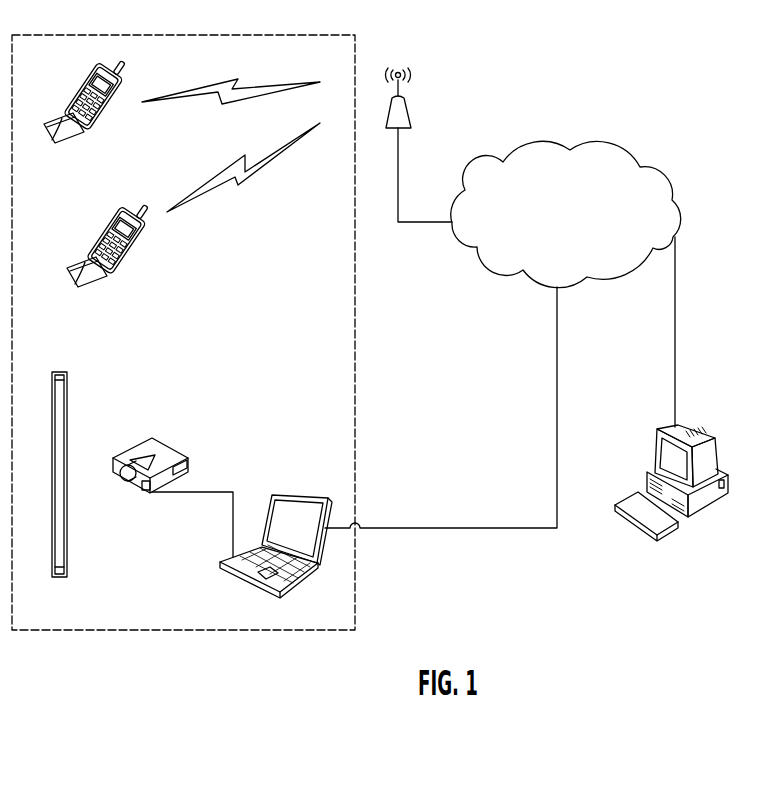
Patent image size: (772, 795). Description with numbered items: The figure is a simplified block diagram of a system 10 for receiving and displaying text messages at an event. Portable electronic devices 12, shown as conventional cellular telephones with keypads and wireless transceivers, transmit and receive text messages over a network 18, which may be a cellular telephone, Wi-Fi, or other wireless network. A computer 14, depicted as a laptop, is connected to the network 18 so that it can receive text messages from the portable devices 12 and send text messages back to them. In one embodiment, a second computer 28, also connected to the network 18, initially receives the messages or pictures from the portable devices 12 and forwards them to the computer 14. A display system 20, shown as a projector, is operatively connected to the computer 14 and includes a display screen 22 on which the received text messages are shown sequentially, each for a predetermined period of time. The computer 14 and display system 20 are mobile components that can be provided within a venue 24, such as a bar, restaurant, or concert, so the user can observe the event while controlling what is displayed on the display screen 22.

The system 10 is at (507, 88).
The portable electronic device 12 is at (103, 135).
The computer 14 is at (307, 477).
The network 18 is at (567, 226).
The display system 20 is at (184, 416).
The display screen 22 is at (92, 553).
The venue 24 is at (362, 387).
The second computer 28 is at (714, 420).